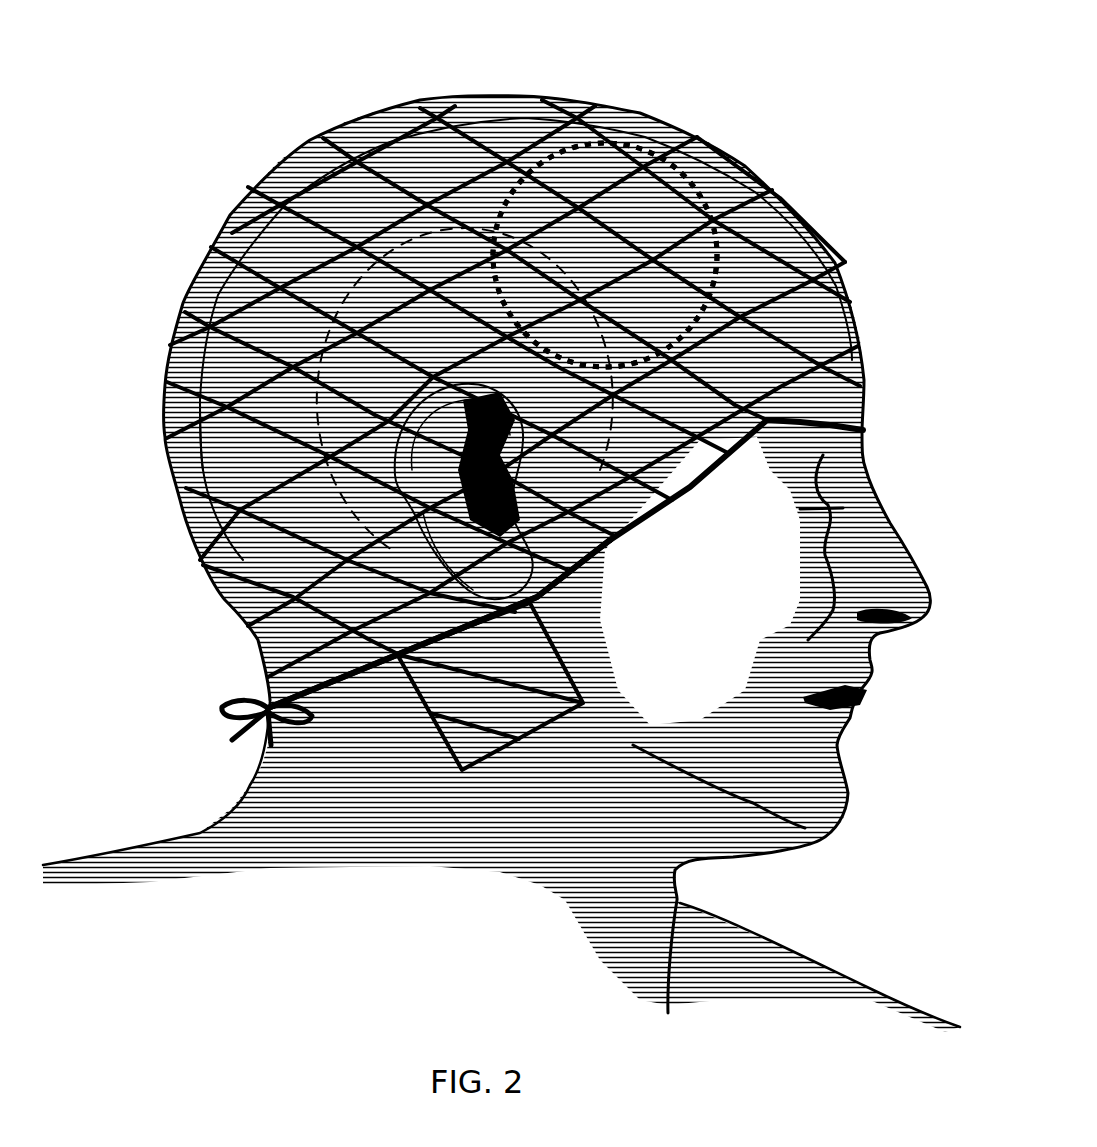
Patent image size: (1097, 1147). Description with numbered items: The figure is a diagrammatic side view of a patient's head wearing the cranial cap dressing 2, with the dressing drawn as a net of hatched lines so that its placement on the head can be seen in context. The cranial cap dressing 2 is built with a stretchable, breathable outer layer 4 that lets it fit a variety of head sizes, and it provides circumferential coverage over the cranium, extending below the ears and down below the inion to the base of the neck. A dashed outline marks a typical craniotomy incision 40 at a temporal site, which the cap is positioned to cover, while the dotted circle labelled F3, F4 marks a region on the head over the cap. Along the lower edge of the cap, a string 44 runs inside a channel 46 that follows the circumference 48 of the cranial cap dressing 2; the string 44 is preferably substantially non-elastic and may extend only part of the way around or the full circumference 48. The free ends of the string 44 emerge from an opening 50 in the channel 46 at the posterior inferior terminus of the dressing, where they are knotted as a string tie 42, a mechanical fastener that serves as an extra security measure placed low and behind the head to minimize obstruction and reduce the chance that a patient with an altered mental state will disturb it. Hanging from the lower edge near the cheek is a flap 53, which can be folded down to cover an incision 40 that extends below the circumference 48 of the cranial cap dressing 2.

The cranial cap dressing 2 is at (887, 190).
The outer layer 4 is at (172, 468).
The craniotomy incision 40 is at (350, 283).
The string tie 42 is at (293, 733).
The string 44 is at (588, 573).
The channel 46 is at (588, 573).
The circumference 48 is at (717, 477).
The opening 50 is at (262, 700).
The flap 53 is at (520, 713).
The electrode position F3 is at (633, 147).
The electrode position F4 is at (633, 147).